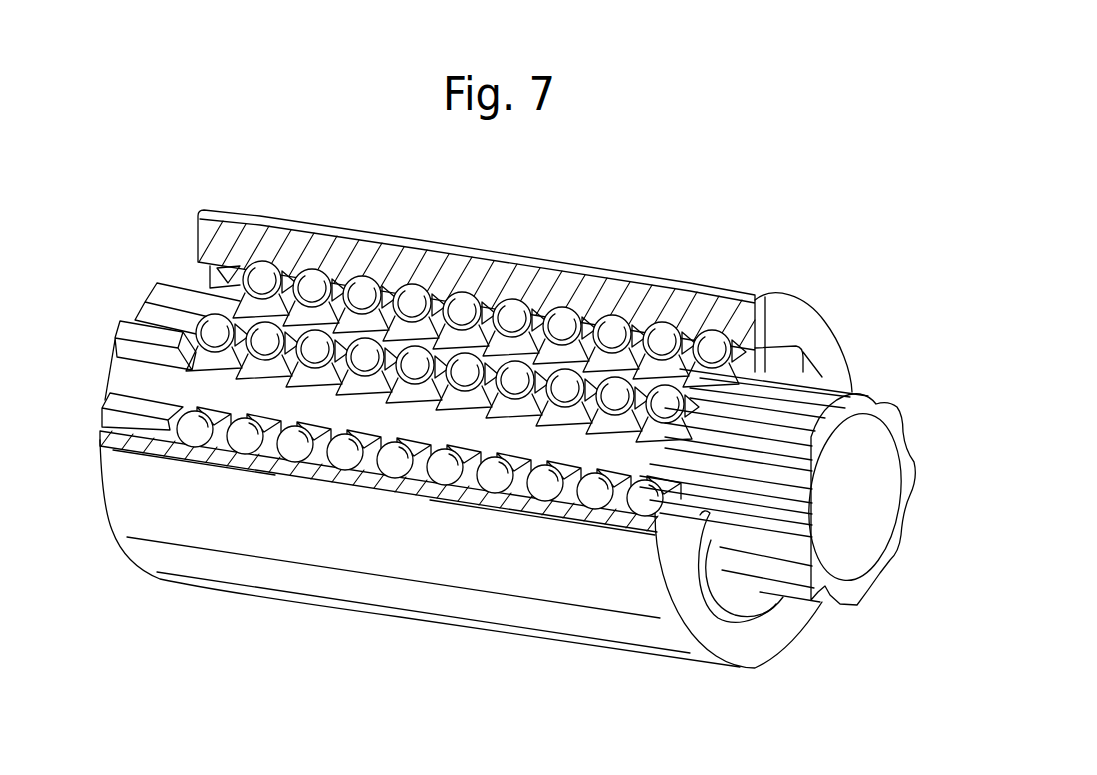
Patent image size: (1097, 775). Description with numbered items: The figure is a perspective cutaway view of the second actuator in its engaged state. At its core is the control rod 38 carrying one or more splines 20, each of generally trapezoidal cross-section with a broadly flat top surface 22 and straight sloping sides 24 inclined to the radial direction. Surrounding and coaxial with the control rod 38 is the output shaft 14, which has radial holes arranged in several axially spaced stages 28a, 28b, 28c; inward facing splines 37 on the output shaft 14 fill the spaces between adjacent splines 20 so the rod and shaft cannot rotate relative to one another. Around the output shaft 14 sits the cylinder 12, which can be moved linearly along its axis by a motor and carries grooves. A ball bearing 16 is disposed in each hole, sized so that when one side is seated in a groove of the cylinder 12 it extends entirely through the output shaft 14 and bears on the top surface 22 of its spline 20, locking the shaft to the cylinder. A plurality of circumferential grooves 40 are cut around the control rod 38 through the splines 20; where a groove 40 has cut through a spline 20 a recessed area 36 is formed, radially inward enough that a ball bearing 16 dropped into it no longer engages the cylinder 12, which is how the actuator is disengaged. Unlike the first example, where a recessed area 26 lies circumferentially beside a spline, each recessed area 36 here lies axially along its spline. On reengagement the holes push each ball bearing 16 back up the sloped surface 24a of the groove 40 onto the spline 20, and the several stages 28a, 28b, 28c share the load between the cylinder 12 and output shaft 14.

The cylinder 12 is at (304, 262).
The output shaft 14 is at (207, 277).
The ball bearing 16 is at (150, 314).
The spline 20 is at (858, 395).
The top surface 22 is at (798, 445).
The sloping side 24 is at (753, 445).
The sloped surface 24a is at (593, 385).
The recessed area 26 is at (770, 483).
The first stage of holes 28a is at (757, 237).
The second stage of holes 28b is at (692, 214).
The third stage of holes 28c is at (630, 212).
The recessed area 36 is at (489, 334).
The groove 40 is at (641, 440).
The inward facing spline 37 is at (687, 515).
The control rod 38 is at (852, 553).